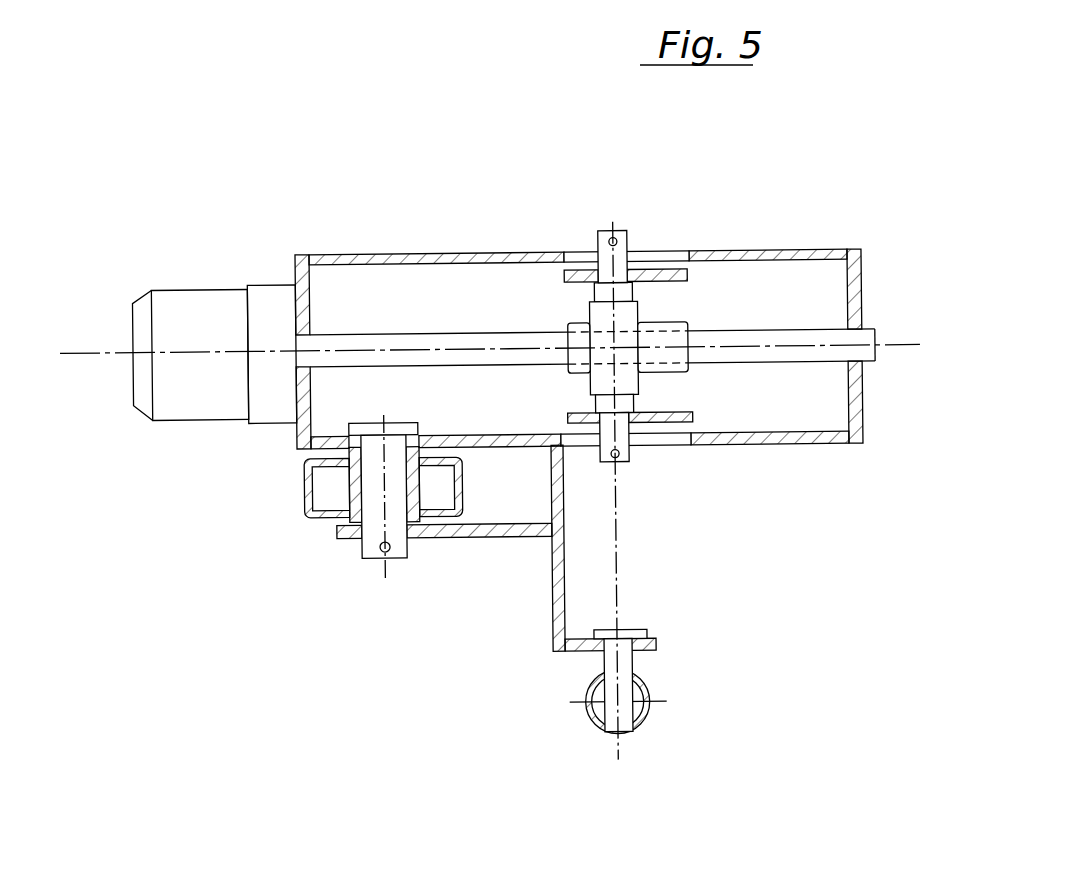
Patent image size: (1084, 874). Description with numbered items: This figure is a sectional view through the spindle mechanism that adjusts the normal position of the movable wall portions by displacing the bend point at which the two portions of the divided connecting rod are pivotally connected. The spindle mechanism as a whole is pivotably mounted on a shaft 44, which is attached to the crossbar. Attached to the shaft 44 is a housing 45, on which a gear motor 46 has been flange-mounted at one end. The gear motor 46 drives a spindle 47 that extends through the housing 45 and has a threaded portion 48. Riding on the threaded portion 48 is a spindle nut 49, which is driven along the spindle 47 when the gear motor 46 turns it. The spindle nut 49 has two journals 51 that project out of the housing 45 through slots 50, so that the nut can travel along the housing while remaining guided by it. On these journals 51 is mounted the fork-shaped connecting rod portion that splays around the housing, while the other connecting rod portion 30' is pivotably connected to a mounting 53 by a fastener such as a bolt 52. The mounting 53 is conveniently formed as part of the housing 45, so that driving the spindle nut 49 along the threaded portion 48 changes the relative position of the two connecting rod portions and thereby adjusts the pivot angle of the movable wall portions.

The shaft 44 is at (362, 546).
The housing 45 is at (368, 260).
The gear motor 46 is at (181, 290).
The spindle 47 is at (412, 345).
The threaded portion 48 is at (673, 335).
The spindle nut 49 is at (602, 358).
The slots 50 is at (667, 255).
The journals 51 is at (600, 237).
The bolt 52 is at (619, 723).
The mounting 53 is at (527, 531).
The connecting rod portion 30' is at (593, 726).